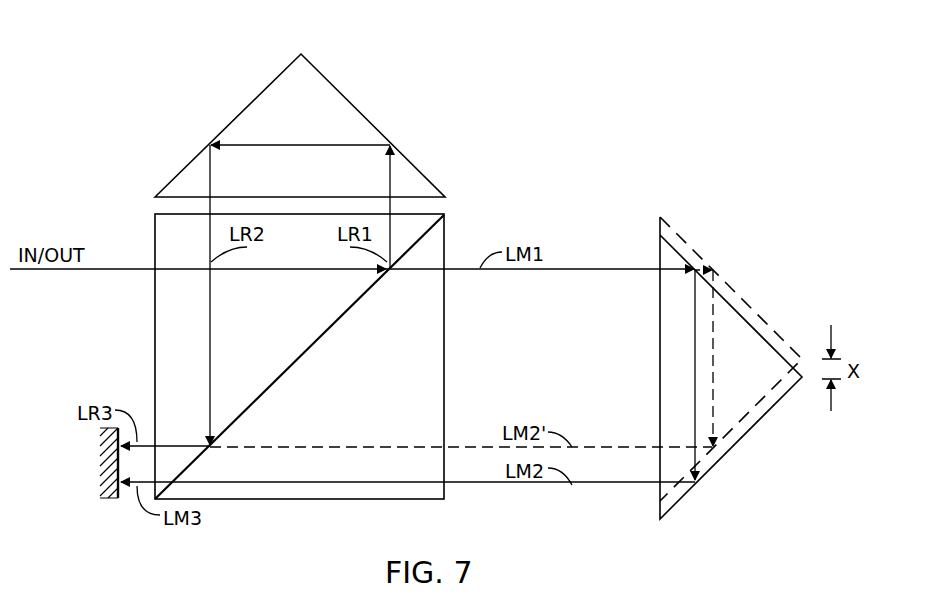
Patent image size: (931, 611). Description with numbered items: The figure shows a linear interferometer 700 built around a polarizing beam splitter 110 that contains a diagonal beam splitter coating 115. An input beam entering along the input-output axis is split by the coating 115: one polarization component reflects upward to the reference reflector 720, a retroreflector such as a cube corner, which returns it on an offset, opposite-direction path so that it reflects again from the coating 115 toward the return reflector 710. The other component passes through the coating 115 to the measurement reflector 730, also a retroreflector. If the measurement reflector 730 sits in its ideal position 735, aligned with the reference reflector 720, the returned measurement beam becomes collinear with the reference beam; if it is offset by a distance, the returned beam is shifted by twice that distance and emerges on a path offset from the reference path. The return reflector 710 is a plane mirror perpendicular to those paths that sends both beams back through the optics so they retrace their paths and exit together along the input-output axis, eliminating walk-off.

The interferometer 700 is at (118, 123).
The reference reflector 720 is at (318, 120).
The polarizing beam splitter 110 is at (430, 402).
The beam splitter coating 115 is at (283, 378).
The return reflector 710 is at (100, 480).
The measurement reflector 730 is at (757, 424).
The position 735 is at (750, 306).